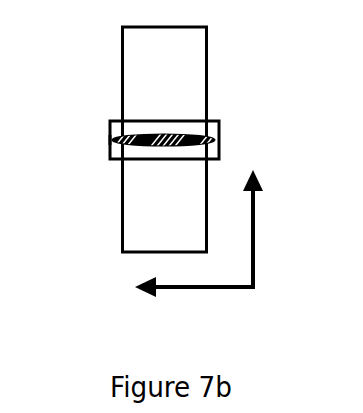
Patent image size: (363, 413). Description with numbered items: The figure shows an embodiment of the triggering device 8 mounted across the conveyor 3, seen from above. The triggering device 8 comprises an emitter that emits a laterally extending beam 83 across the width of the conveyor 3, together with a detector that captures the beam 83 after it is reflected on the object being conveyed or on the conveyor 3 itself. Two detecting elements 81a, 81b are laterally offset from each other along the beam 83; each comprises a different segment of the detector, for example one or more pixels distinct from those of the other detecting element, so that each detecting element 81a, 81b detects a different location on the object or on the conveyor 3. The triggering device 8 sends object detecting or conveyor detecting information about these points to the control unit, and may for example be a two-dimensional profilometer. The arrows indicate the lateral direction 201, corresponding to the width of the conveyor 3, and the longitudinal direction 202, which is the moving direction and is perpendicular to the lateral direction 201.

The conveyor 3 is at (147, 98).
The triggering device 8 is at (112, 143).
The laterally extending beam 83 is at (113, 127).
The detecting element 81a is at (147, 133).
The detecting element 81b is at (194, 133).
The lateral direction 201 is at (197, 288).
The longitudinal direction 202 is at (255, 253).